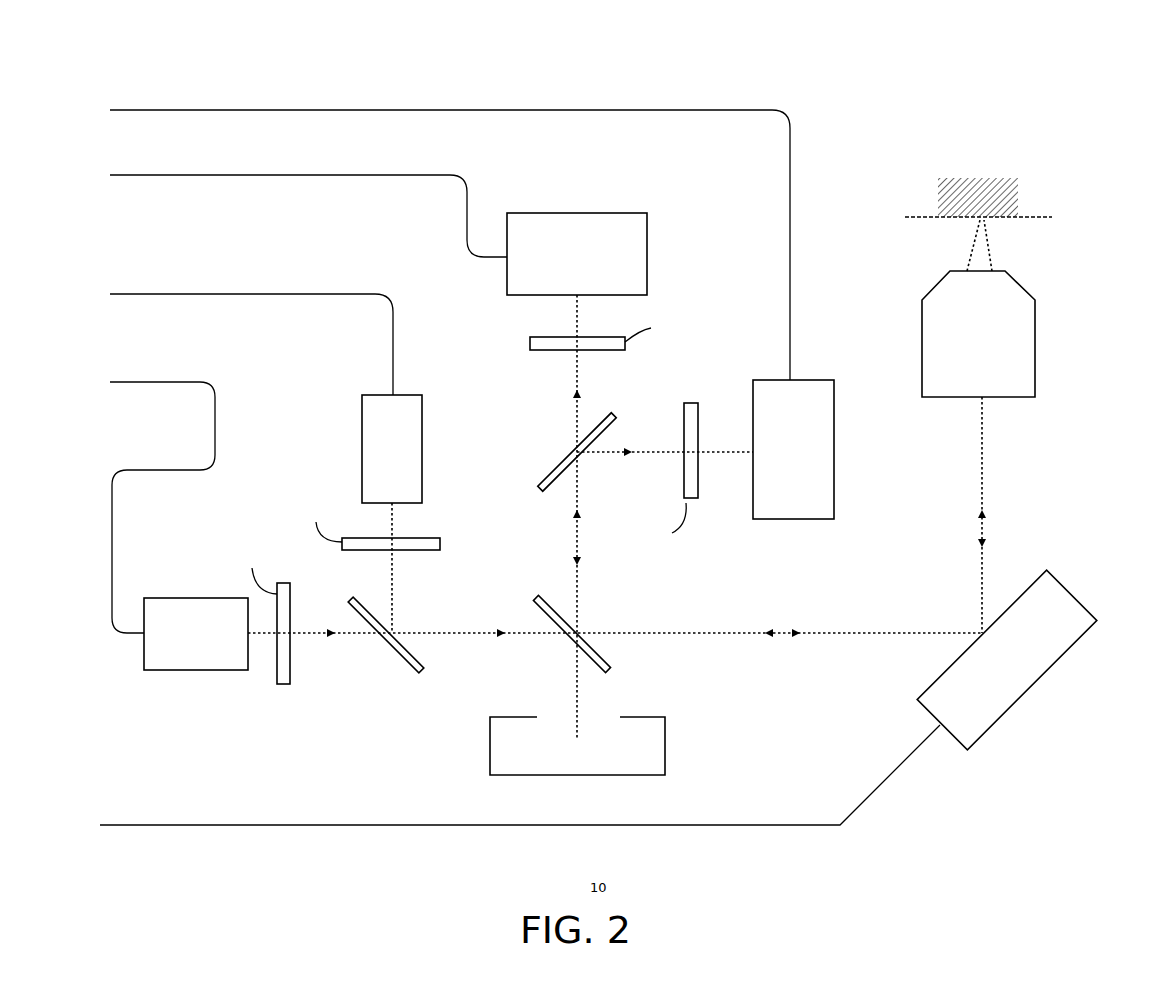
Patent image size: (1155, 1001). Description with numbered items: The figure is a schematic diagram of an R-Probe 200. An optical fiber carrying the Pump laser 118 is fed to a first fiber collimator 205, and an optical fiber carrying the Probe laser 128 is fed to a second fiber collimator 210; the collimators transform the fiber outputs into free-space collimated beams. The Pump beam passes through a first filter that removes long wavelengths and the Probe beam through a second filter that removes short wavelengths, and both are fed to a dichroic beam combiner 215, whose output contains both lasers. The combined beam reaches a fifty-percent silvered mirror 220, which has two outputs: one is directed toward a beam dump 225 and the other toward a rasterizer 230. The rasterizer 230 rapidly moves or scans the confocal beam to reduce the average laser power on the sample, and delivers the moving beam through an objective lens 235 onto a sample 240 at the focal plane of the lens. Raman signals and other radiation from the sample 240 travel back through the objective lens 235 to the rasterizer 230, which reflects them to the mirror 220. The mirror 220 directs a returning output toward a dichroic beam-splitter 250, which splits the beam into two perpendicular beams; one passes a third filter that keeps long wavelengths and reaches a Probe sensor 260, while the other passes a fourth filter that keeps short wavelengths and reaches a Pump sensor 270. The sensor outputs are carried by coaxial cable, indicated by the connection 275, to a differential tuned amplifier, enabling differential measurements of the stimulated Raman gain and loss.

The R-Probe 200 is at (557, 73).
The coax to differential tuned amplifier connection 275 is at (363, 110).
The optical fiber carrying the Probe laser 128 is at (327, 294).
The optical fiber carrying the Pump laser 118 is at (115, 497).
The second fiber collimator 210 is at (362, 428).
The first fiber collimator 205 is at (208, 670).
The dichroic beam combiner 215 is at (407, 678).
The 50% silvered mirror 220 is at (610, 667).
The beam dump 225 is at (665, 745).
The dichroic beam-splitter 250 is at (553, 465).
The Probe sensor 260 is at (645, 258).
The Pump sensor 270 is at (835, 482).
The objective lens 235 is at (1037, 340).
The sample 240 is at (1019, 203).
The rasterizer 230 is at (1057, 590).